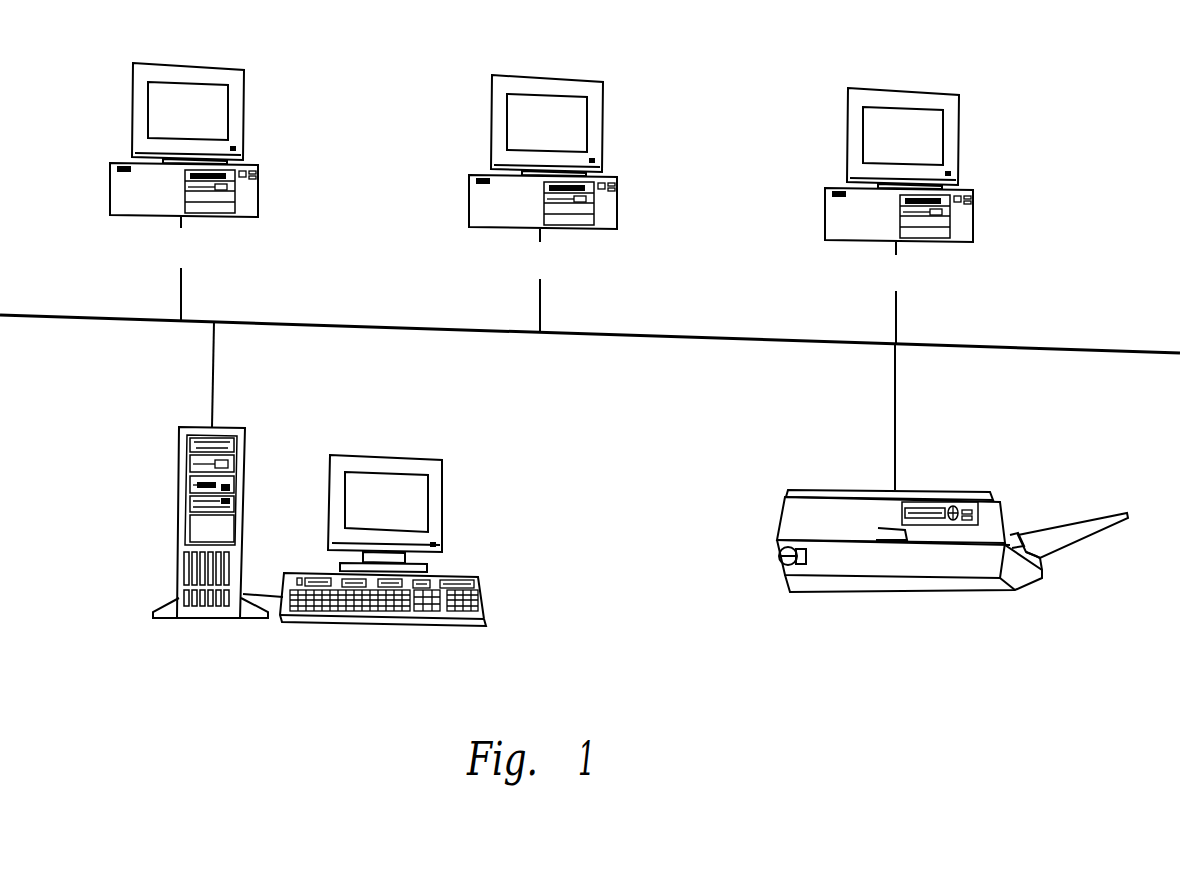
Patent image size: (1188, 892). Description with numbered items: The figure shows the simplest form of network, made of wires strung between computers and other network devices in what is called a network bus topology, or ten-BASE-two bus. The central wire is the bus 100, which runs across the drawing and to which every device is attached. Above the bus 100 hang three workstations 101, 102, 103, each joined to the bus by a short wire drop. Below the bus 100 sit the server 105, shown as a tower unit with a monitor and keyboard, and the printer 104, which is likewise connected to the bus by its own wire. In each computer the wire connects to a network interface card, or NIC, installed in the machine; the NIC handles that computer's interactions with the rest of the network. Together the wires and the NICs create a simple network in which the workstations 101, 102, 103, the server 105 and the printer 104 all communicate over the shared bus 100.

The bus 100 is at (563, 380).
The workstation 101 is at (960, 110).
The workstation 102 is at (602, 98).
The workstation 103 is at (244, 87).
The printer 104 is at (963, 491).
The server 105 is at (442, 480).